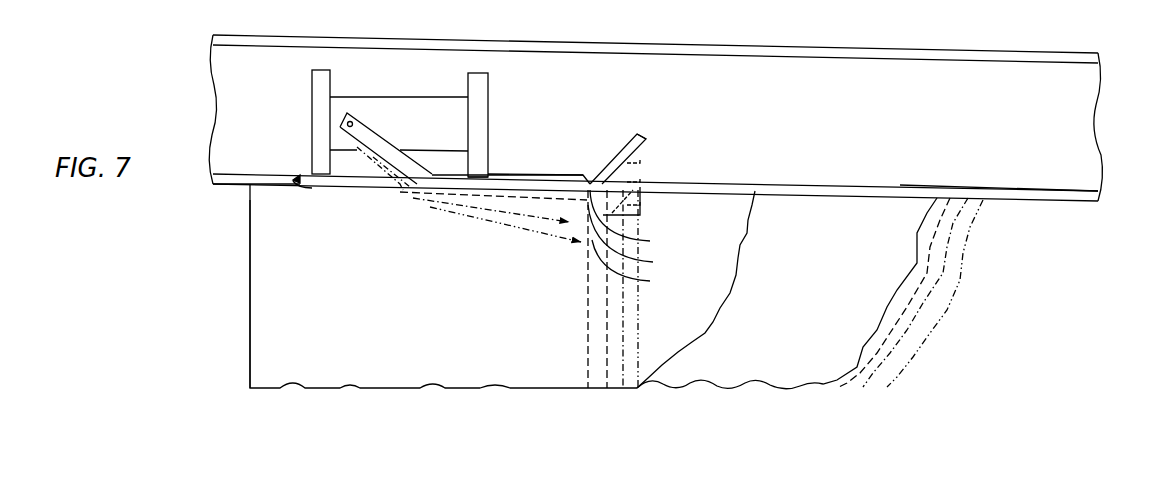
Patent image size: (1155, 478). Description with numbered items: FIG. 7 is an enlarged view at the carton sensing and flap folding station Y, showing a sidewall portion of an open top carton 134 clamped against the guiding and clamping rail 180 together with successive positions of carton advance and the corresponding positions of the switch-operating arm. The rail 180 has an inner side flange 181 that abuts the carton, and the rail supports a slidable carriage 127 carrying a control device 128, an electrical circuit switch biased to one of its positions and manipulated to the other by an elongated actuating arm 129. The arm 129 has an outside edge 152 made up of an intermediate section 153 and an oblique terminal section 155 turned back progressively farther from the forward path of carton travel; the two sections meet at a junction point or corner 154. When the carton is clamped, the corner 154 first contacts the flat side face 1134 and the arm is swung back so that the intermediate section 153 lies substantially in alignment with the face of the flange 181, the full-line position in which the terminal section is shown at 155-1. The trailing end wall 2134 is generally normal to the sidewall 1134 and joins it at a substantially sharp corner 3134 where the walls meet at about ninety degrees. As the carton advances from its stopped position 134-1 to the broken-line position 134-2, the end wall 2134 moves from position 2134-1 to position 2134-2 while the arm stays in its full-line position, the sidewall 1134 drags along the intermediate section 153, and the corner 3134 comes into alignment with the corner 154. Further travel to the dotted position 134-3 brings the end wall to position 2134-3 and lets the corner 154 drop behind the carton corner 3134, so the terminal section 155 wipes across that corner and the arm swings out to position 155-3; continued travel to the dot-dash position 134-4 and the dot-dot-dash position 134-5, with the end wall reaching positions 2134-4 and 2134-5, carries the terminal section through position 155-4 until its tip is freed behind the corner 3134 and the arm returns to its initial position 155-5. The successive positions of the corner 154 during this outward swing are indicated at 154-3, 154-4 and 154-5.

The carriage 127 is at (477, 73).
The control device 128 is at (382, 97).
The switch actuating arm 129 is at (512, 173).
The carton 134 is at (452, 320).
The carton position 134-1 is at (718, 324).
The carton forward position 134-2 is at (835, 382).
The carton dotted line position 134-3 is at (881, 375).
The carton dot-dash position 134-4 is at (894, 357).
The carton dot-dot-dash position 134-5 is at (924, 338).
The outside edge 152 is at (366, 150).
The intermediate edge section 153 is at (470, 181).
The junction point 154 is at (591, 184).
The lever arm position 154-3 is at (651, 220).
The lever arm position 154-4 is at (561, 236).
The lever arm position 154-5 is at (569, 253).
The oblique terminal section 155 is at (615, 162).
The lever tip position 155-1 is at (641, 142).
The terminal edge section dotted line position 155-3 is at (640, 161).
The terminal edge section dot-dash position 155-4 is at (637, 184).
The terminal edge section dot-dot-dash position 155-5 is at (614, 216).
The guiding and clamping rail 180 is at (1100, 135).
The inner side flange 181 is at (1066, 196).
The carton side face 1134 is at (309, 191).
The trailing carton end wall 2134 is at (248, 295).
The end wall position 2134-1 is at (248, 352).
The end wall position 2134-2 is at (586, 358).
The end wall position 2134-3 is at (604, 378).
The wall position 2134-4 is at (621, 381).
The wall position 2134-5 is at (632, 376).
The carton corner 3134 is at (248, 186).
The flap folding station Y is at (679, 40).